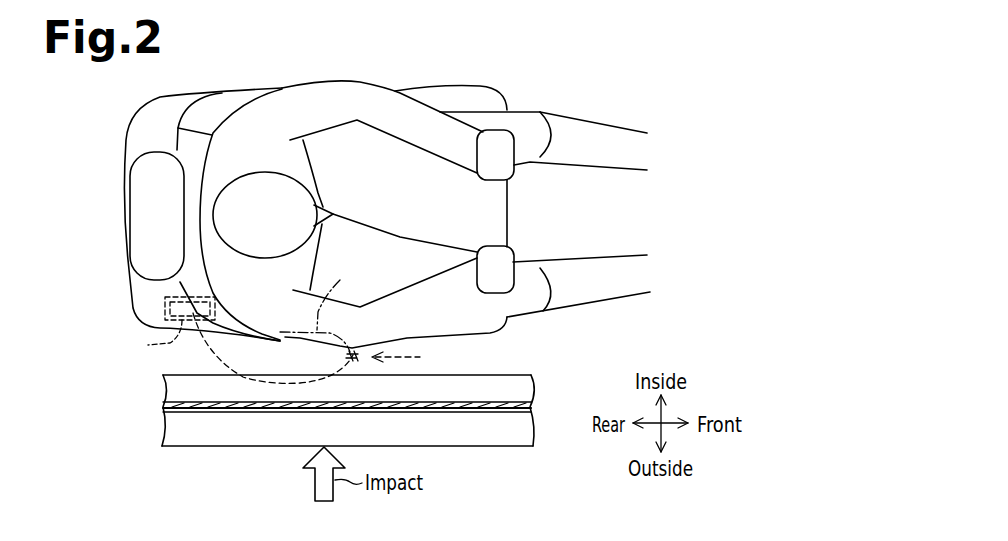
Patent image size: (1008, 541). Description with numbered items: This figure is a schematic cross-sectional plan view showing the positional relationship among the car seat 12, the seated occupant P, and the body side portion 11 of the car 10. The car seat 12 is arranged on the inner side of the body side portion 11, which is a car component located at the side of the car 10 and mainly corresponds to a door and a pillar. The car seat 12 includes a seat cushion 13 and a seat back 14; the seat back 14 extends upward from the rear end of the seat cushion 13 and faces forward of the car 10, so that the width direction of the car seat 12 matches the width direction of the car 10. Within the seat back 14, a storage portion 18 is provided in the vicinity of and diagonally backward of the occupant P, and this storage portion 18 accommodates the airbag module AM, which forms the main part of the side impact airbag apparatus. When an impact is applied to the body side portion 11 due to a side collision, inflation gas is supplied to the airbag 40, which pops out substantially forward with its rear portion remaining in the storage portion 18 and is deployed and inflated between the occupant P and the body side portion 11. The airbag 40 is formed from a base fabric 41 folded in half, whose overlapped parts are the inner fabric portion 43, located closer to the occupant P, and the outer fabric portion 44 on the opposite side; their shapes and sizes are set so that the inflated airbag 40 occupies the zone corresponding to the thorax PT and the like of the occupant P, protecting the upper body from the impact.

The seat back 14 is at (127, 137).
The car seat 12 is at (153, 214).
The occupant P is at (207, 197).
The thorax PT is at (301, 157).
The seat cushion 13 is at (495, 212).
The base fabric 41 is at (301, 349).
The inner fabric portion 43 is at (340, 308).
The outer fabric portion 44 is at (310, 383).
The storage portion 18 is at (167, 305).
The airbag module AM is at (149, 341).
The airbag 40 is at (413, 357).
The body side portion 11 is at (208, 471).
The car 10 is at (348, 446).